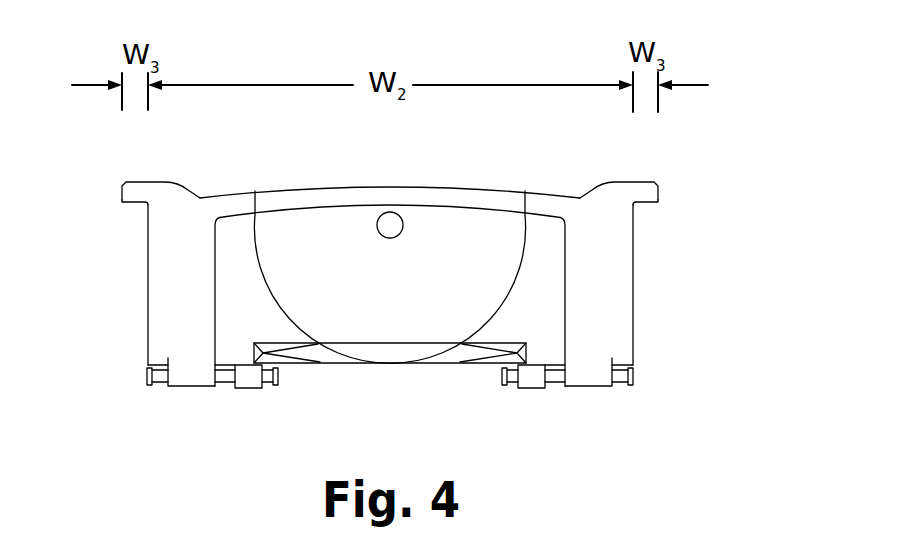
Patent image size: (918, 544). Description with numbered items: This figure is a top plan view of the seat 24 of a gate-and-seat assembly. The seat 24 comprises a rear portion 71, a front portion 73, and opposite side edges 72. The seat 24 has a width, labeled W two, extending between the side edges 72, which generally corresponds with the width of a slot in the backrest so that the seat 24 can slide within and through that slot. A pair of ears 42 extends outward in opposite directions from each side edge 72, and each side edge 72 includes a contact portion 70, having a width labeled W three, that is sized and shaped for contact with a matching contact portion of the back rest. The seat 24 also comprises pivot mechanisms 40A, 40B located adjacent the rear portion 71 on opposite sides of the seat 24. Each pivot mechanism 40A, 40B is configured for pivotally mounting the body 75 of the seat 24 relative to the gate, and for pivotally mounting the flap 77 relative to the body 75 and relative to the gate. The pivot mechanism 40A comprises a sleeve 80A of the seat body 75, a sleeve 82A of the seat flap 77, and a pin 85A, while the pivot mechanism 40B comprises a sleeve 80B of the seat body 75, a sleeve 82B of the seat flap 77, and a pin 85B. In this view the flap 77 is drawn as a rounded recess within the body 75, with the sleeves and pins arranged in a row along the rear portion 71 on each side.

The seat 24 is at (136, 268).
The ears 42 is at (138, 192).
The front portion 73 is at (327, 191).
The contact portion 70 is at (135, 205).
The side edges 72 is at (148, 302).
The body 75 is at (615, 290).
The flap 77 is at (407, 298).
The rear portion 71 is at (385, 364).
The pivot mechanism 40A is at (142, 402).
The pivot mechanism 40B is at (641, 400).
The sleeve 80A is at (183, 387).
The sleeve 80B is at (590, 388).
The sleeve 82A is at (247, 389).
The sleeve 82B is at (532, 390).
The pin 85A is at (147, 378).
The pin 85B is at (636, 377).